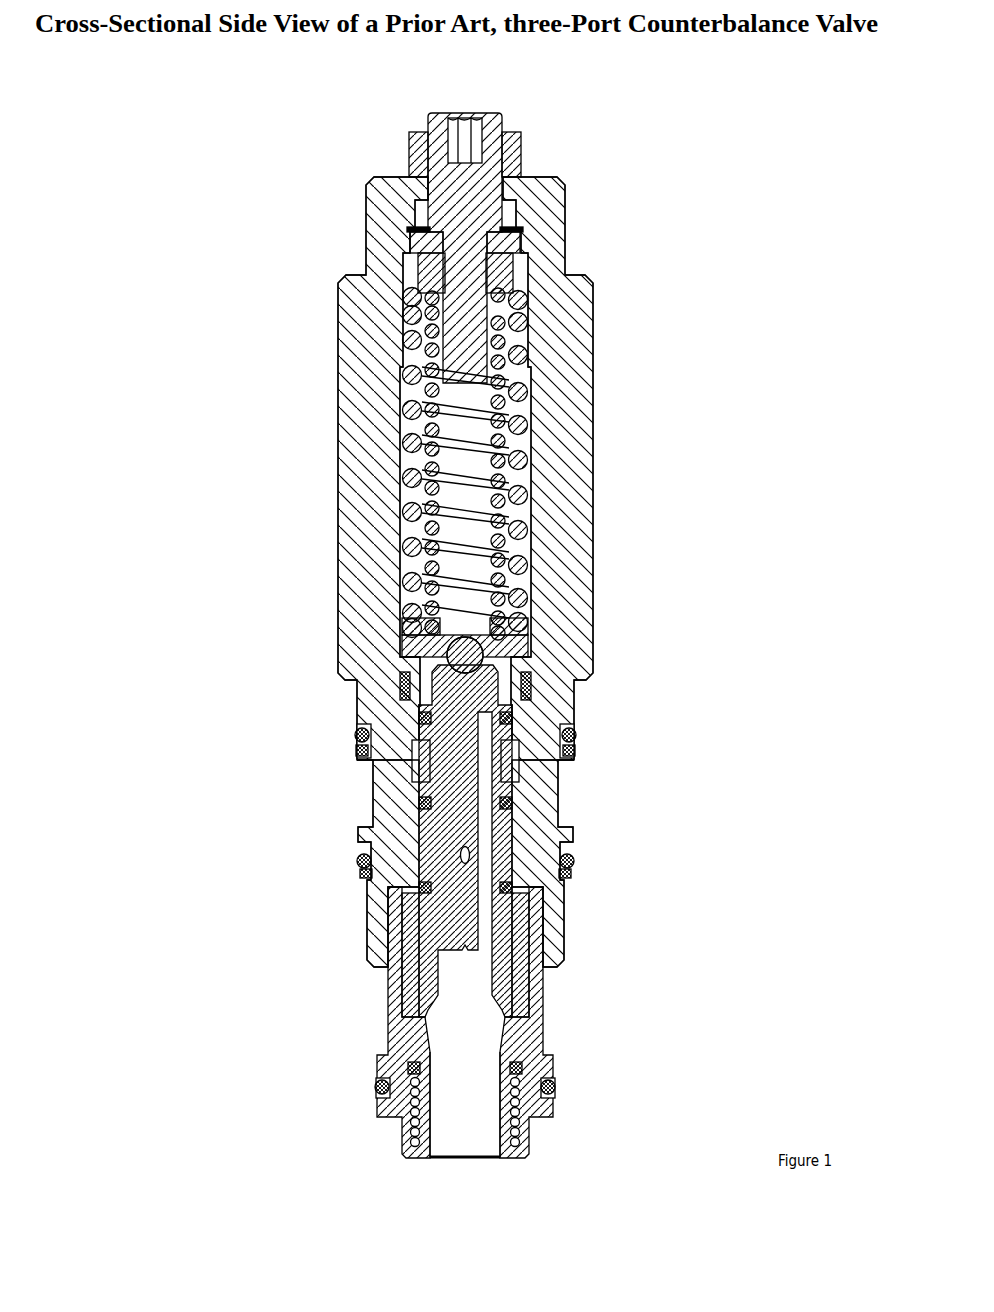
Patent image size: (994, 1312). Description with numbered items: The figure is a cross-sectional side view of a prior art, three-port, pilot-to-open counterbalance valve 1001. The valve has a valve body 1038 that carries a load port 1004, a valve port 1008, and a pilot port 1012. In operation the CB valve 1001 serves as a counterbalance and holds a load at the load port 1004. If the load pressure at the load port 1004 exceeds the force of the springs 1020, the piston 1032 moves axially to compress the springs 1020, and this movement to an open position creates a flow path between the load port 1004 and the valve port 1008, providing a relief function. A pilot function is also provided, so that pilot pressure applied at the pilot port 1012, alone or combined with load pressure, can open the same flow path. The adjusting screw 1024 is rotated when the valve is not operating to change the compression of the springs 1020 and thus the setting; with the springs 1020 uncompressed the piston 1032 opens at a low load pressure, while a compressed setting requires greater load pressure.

The CB valve 1001 is at (471, 636).
The load port 1004 is at (475, 1141).
The valve port 1008 is at (563, 1014).
The pilot port 1012 is at (579, 797).
The springs 1020 is at (520, 494).
The adjusting screw 1024 is at (500, 118).
The piston 1032 is at (440, 925).
The valve body 1038 is at (357, 521).